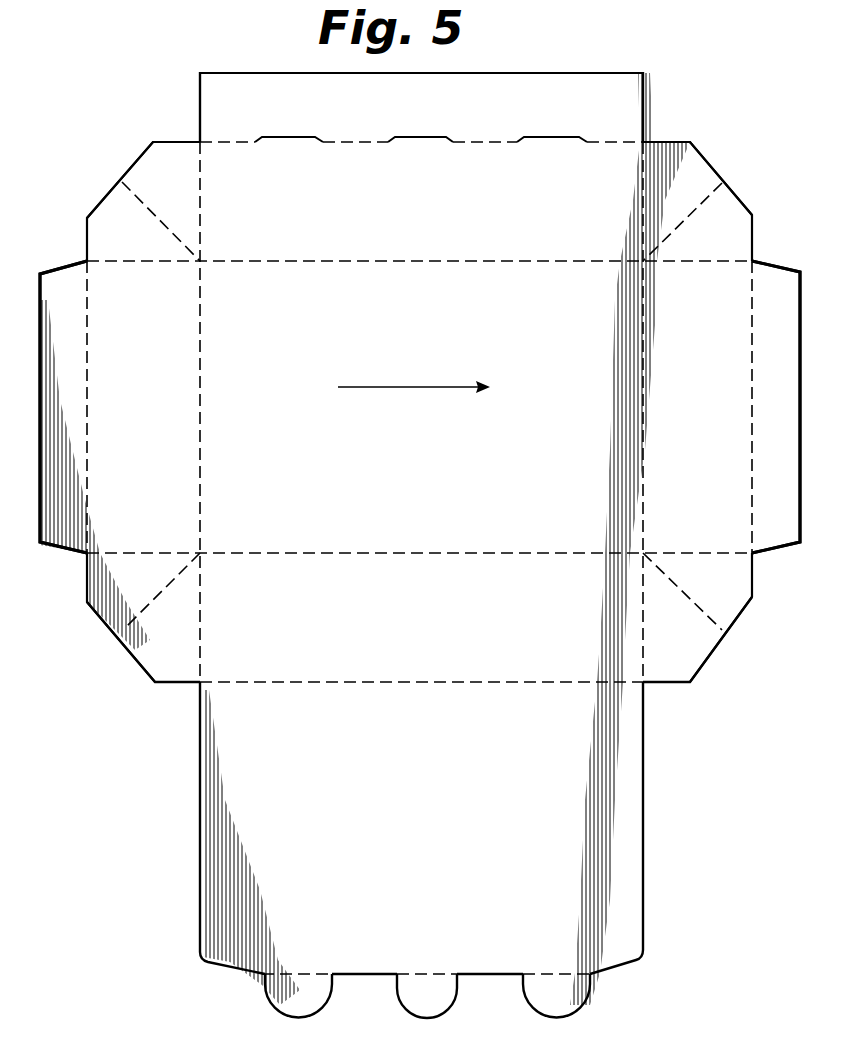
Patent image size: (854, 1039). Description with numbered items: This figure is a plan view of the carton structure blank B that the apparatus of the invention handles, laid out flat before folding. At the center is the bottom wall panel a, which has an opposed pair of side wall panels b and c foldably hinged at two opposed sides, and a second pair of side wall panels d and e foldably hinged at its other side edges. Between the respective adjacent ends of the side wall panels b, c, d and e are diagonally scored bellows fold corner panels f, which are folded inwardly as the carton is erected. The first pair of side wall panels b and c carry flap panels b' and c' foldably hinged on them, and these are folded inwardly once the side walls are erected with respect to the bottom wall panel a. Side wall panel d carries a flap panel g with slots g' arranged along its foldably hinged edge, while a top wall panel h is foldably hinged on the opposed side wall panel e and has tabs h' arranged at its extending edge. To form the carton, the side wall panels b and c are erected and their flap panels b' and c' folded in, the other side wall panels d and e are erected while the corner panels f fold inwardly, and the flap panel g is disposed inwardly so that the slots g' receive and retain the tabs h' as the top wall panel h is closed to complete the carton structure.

The carton structure blank B is at (199, 73).
The bottom wall panel a is at (421, 472).
The side wall panel b is at (697, 407).
The flap panel b' is at (776, 407).
The side wall panel c is at (143, 407).
The flap panel c' is at (63, 407).
The side wall panel d is at (423, 200).
The side wall panel e is at (421, 621).
The bellows fold corner panels f is at (172, 196).
The flap panel g is at (421, 107).
The slots g' is at (421, 120).
The top wall panel h is at (421, 828).
The tabs h' is at (427, 974).